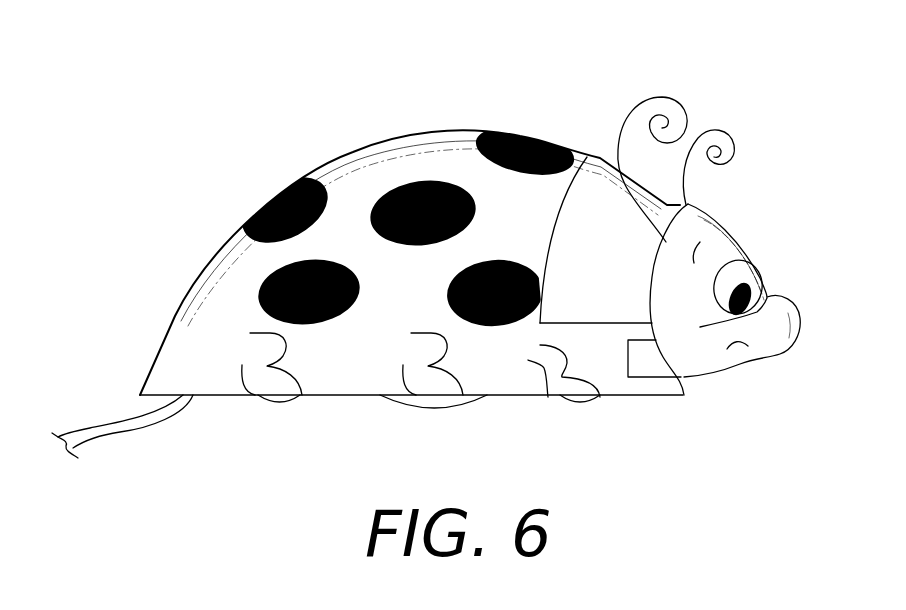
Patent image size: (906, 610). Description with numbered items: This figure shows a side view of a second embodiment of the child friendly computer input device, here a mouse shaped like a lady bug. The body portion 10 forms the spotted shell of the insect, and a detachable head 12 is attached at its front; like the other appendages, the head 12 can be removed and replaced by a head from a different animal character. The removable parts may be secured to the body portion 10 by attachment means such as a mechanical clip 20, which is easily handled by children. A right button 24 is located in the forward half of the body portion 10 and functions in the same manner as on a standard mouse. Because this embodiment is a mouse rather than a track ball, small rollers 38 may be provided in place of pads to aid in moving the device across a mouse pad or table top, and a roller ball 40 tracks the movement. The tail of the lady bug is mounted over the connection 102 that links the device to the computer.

The body portion 10 is at (411, 133).
The right button 24 is at (585, 224).
The head 12 is at (712, 248).
The mechanical clip 20 is at (643, 360).
The small rollers 38 is at (280, 402).
The roller ball 40 is at (462, 400).
The connection 102 is at (147, 427).